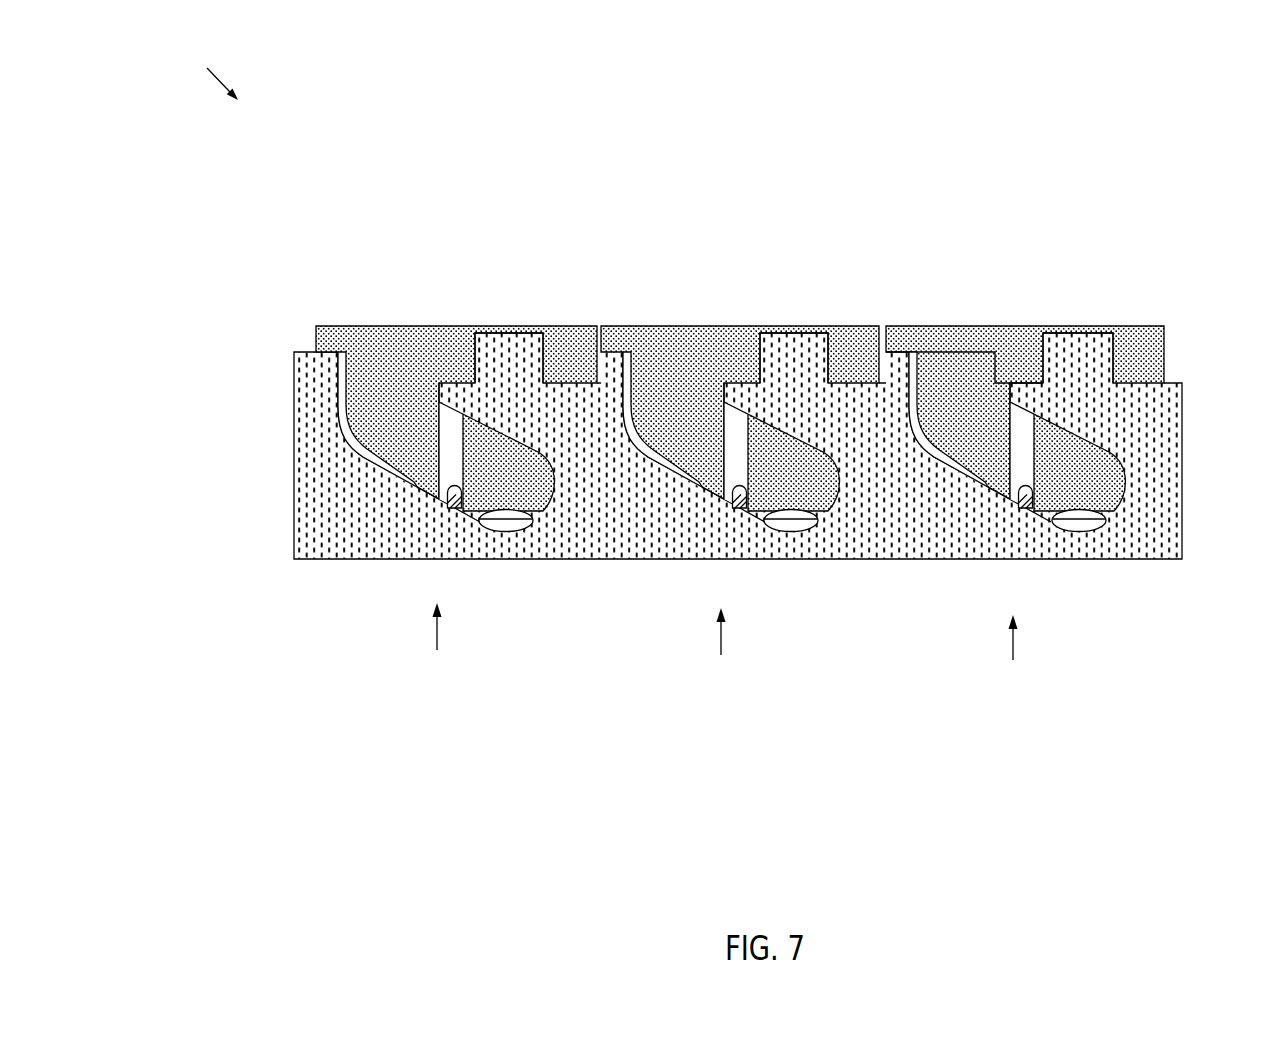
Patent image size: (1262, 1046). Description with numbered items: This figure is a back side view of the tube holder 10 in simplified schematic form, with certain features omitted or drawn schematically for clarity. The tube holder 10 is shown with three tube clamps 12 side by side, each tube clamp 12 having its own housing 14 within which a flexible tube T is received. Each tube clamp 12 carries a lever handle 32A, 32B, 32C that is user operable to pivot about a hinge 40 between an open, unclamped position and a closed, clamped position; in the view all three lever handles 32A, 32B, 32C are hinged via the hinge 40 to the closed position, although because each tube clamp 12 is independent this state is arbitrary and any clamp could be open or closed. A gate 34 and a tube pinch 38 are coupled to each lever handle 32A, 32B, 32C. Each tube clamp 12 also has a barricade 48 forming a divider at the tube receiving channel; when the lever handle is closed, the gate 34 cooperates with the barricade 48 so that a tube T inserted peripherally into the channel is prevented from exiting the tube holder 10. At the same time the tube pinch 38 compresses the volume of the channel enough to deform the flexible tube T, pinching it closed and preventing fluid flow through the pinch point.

The tube holder 10 is at (209, 70).
The tube clamp 12 is at (724, 647).
The housing 14 is at (295, 448).
The lever handle 32A is at (921, 325).
The lever handle 32B is at (642, 325).
The lever handle 32C is at (382, 326).
The gate 34 is at (423, 493).
The tube pinch 38 is at (553, 495).
The hinge 40 is at (507, 329).
The barricade 48 is at (467, 517).
The tube T is at (527, 533).